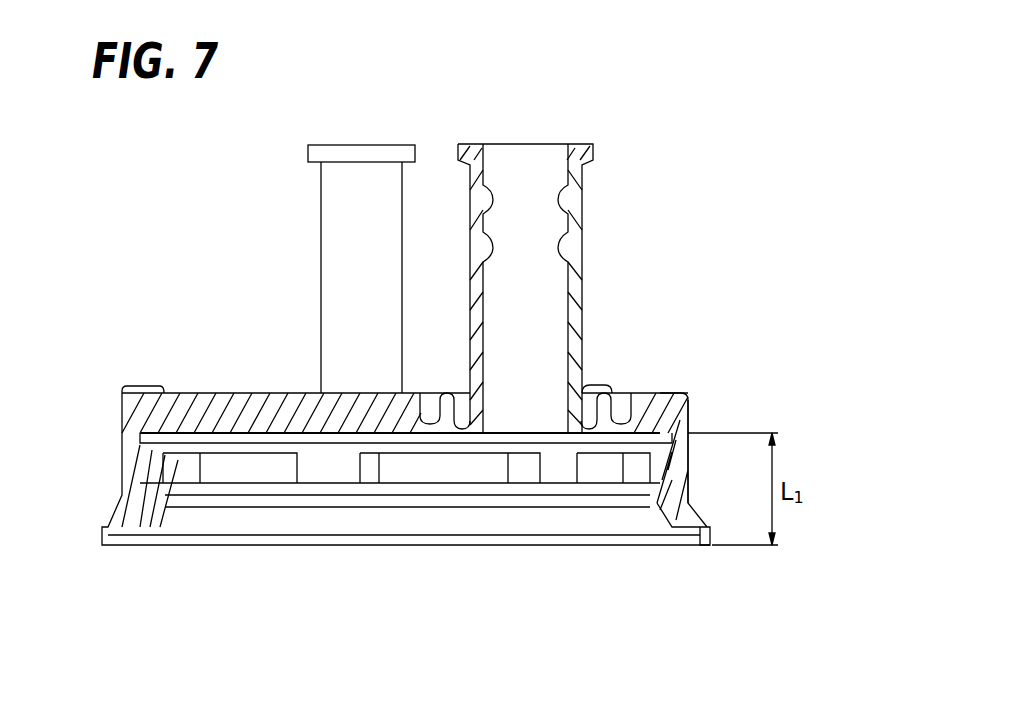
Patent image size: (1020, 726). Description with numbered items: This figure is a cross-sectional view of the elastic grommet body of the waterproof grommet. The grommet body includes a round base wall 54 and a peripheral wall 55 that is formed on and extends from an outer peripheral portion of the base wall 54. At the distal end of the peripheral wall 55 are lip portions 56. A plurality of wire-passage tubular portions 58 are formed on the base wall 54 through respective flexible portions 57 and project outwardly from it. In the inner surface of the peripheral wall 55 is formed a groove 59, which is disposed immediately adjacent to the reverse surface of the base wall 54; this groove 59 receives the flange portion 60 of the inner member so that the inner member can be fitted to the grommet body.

The base wall 54 is at (274, 396).
The peripheral wall 55 is at (690, 478).
The lip portions 56 is at (700, 546).
The flexible portions 57 is at (620, 395).
The wire-passage tubular portions 58 is at (583, 312).
The groove 59 is at (672, 393).
The flange portion 60 is at (361, 269).